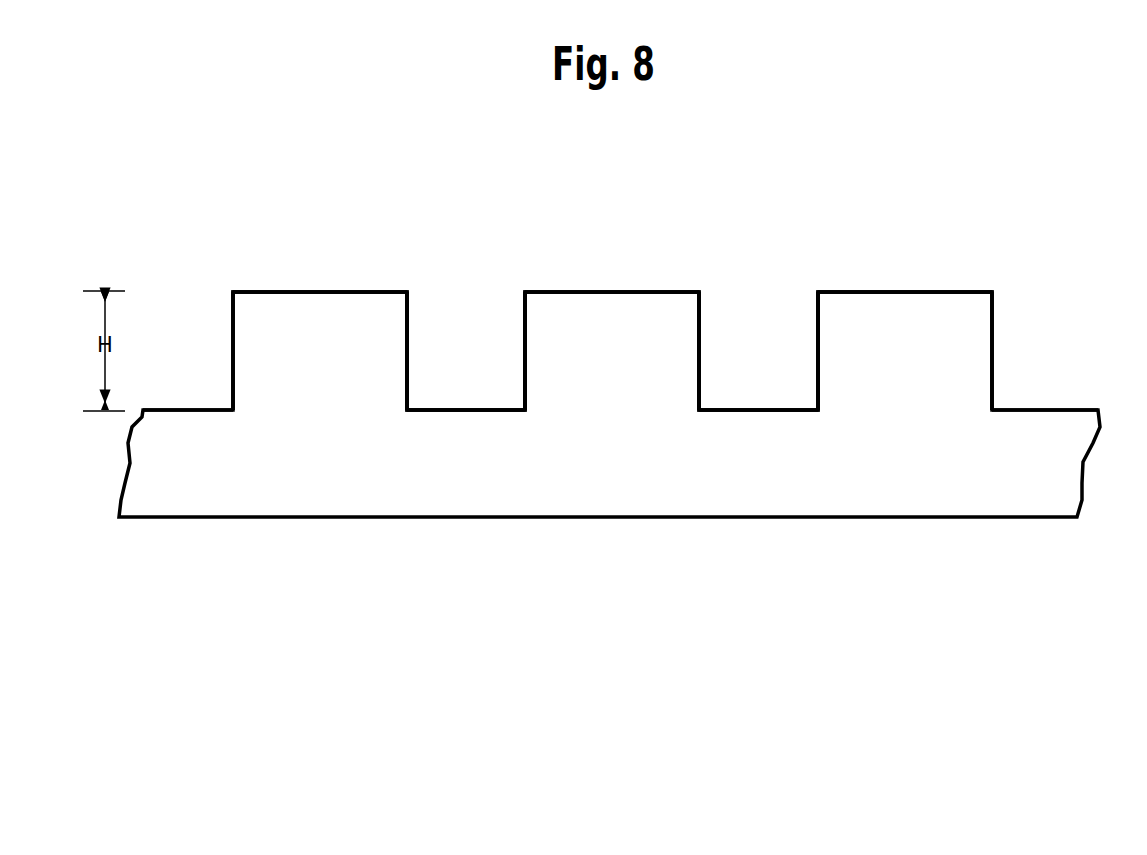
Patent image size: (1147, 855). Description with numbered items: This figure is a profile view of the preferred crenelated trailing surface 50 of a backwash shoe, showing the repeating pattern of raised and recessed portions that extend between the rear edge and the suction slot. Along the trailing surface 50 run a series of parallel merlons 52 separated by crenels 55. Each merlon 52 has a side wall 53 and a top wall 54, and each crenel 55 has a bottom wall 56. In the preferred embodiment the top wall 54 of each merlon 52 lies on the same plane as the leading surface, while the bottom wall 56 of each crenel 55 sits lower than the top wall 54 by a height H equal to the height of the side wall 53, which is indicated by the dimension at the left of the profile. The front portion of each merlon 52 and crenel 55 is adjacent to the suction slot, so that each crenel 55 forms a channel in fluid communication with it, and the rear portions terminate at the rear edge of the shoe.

The trailing surface 50 is at (455, 236).
The merlon 52 is at (303, 280).
The side wall 53 is at (233, 315).
The top wall 54 is at (368, 291).
The crenel 55 is at (445, 400).
The bottom wall 56 is at (212, 410).